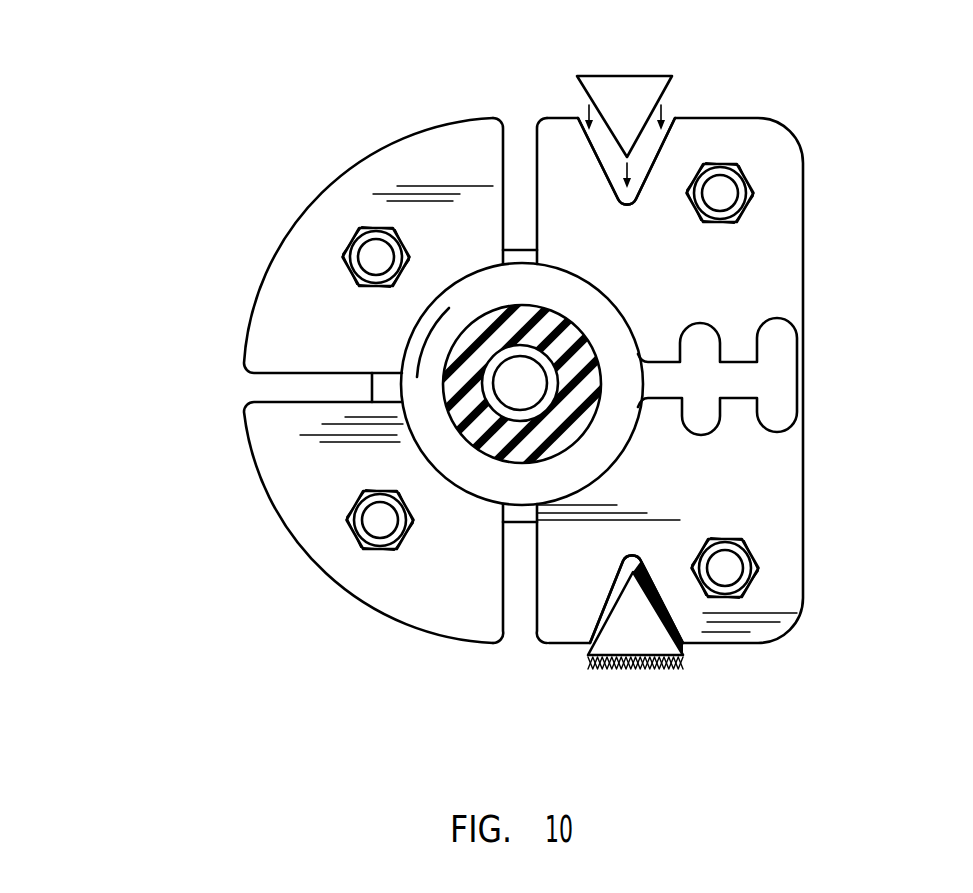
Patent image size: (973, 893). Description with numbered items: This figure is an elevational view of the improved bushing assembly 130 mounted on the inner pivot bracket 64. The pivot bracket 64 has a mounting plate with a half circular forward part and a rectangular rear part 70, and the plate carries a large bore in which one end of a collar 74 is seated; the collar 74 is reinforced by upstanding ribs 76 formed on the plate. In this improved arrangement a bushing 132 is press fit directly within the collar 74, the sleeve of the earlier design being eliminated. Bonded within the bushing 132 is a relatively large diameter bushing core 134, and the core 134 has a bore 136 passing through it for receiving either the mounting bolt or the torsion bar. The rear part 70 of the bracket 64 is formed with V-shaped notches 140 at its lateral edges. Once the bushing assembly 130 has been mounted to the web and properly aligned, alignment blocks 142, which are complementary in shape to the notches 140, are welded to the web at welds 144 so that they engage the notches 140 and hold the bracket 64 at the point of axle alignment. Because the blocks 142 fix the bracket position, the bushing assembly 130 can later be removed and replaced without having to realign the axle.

The inner pivot bracket 64 is at (320, 232).
The rectangular rear part 70 is at (772, 230).
The collar 74 is at (598, 468).
The upstanding ribs 76 is at (510, 203).
The bushing assembly 130 is at (255, 278).
The bushing 132 is at (455, 380).
The bushing core 134 is at (488, 377).
The bore 136 is at (520, 368).
The V-shaped notches 140 is at (647, 152).
The alignment blocks 142 is at (602, 95).
The weld 144 is at (613, 670).